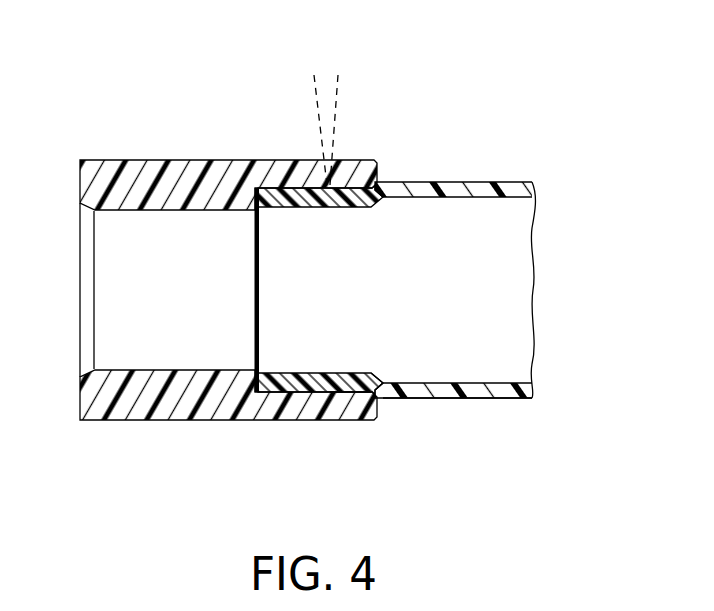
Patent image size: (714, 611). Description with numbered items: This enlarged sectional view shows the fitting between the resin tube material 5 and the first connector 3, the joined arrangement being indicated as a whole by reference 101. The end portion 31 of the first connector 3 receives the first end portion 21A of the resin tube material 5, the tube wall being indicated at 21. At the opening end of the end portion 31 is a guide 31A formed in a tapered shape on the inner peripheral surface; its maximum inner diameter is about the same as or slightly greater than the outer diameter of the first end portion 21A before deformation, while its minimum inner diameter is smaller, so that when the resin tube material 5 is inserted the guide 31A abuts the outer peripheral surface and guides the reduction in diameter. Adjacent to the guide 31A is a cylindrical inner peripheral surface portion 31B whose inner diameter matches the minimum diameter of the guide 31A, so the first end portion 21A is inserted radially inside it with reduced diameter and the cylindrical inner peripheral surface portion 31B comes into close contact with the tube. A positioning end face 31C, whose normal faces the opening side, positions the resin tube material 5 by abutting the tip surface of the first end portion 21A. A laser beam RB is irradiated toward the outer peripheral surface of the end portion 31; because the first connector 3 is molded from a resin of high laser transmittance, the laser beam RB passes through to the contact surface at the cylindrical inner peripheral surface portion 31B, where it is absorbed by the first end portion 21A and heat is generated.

The first connector 3 is at (125, 157).
The end portion of the first connector 31 is at (284, 167).
The guide 31A is at (377, 387).
The cylindrical inner peripheral surface portion 31B is at (328, 392).
The positioning end face 31C is at (257, 377).
The pipe wall 21 is at (497, 392).
The first end portion of the resin tube material 21A is at (343, 203).
The resin tube material 5 is at (528, 400).
The pipe connection assembly 101 is at (340, 269).
The laser beam RB is at (337, 102).